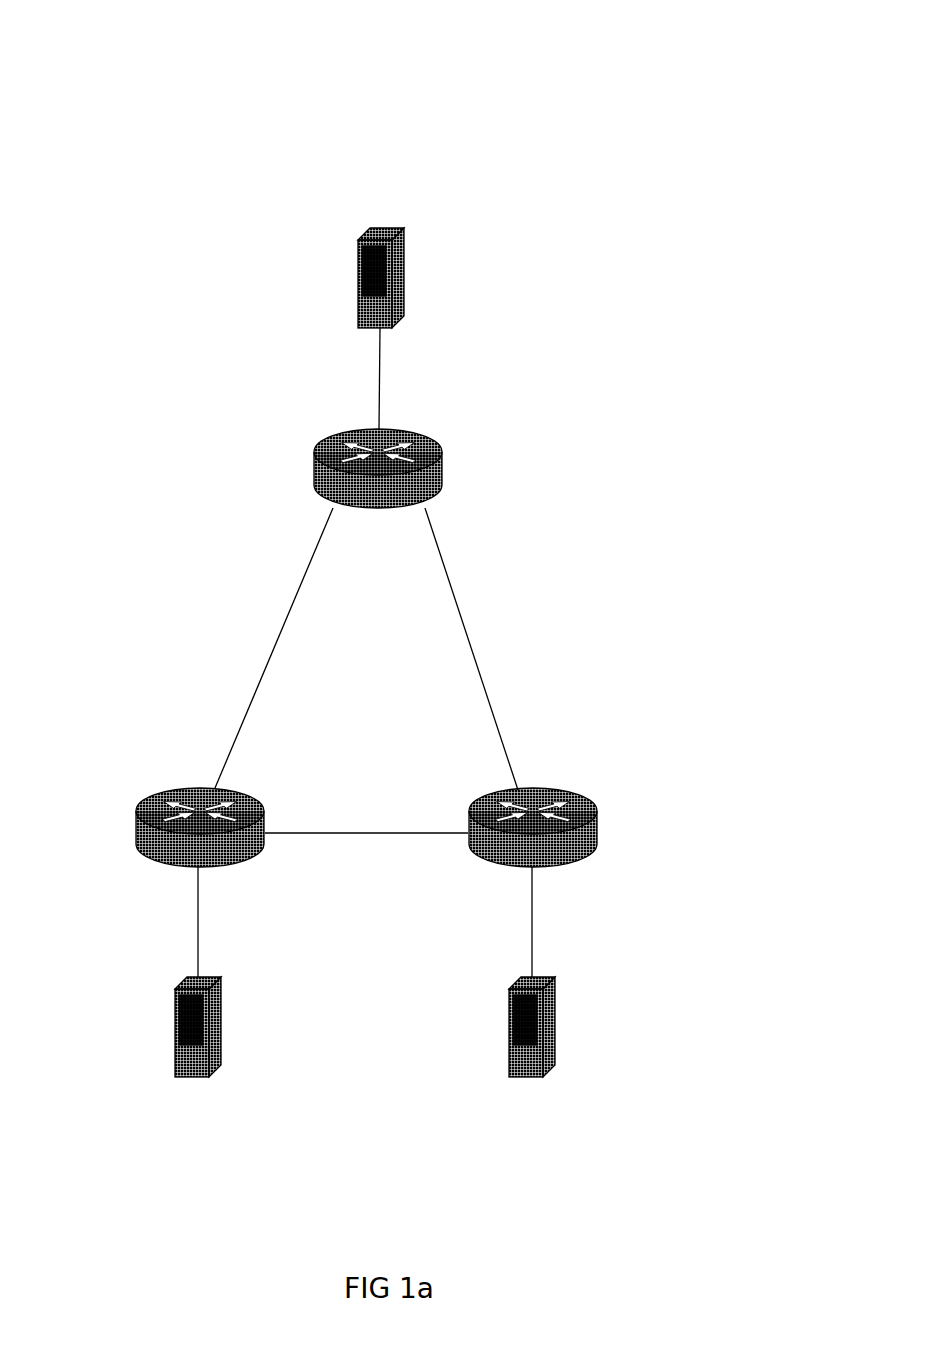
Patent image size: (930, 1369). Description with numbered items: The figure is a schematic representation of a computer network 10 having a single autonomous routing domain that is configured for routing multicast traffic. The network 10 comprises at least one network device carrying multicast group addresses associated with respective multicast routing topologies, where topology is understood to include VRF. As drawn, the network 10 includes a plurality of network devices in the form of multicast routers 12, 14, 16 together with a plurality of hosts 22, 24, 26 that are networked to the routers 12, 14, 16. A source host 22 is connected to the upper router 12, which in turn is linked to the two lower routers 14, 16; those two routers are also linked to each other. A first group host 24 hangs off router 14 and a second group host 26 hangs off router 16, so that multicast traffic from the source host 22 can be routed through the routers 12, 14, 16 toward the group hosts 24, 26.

The computer network 10 is at (128, 82).
The multicast router 12 is at (314, 478).
The multicast router 14 is at (135, 843).
The multicast router 16 is at (598, 838).
The host 22 is at (358, 285).
The host 24 is at (173, 1035).
The host 26 is at (508, 1035).